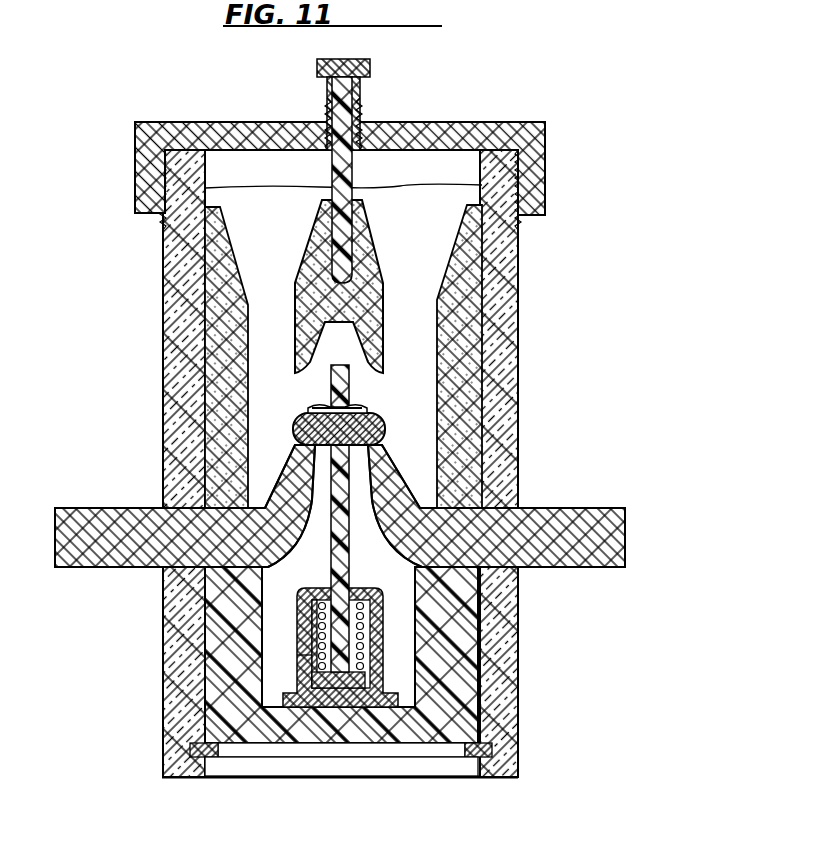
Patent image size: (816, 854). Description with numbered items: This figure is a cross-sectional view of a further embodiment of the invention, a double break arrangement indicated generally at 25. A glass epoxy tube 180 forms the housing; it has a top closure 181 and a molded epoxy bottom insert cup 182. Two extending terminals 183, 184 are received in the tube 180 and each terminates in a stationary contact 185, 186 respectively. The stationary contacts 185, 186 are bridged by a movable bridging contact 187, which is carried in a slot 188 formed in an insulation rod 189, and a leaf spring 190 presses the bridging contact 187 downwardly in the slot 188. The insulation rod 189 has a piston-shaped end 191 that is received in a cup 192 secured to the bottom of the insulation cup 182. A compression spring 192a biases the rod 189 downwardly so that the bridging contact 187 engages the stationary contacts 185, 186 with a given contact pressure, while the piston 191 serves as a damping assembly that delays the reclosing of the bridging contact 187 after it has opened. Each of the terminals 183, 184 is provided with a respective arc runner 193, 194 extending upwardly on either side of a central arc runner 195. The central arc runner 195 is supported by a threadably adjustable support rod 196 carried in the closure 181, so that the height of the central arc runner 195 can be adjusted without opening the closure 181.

The interrupter assembly 25 is at (112, 262).
The glass epoxy tube 180 is at (497, 396).
The top closure 181 is at (540, 121).
The molded epoxy bottom insert cup 182 is at (462, 643).
The extending terminal 183 is at (140, 570).
The extending terminal 184 is at (578, 568).
The stationary contact 185 is at (288, 470).
The stationary contact 186 is at (415, 482).
The movable bridging contact 187 is at (372, 413).
The slot 188 is at (386, 432).
The insulation rod 189 is at (333, 566).
The leaf spring 190 is at (318, 408).
The piston-shaped end 191 is at (340, 690).
The cup 192 is at (297, 675).
The compression spring 192a is at (362, 657).
The arc runner 193 is at (206, 376).
The arc runner 194 is at (468, 350).
The central arc runner 195 is at (385, 300).
The threadably adjustable support rod 196 is at (352, 186).